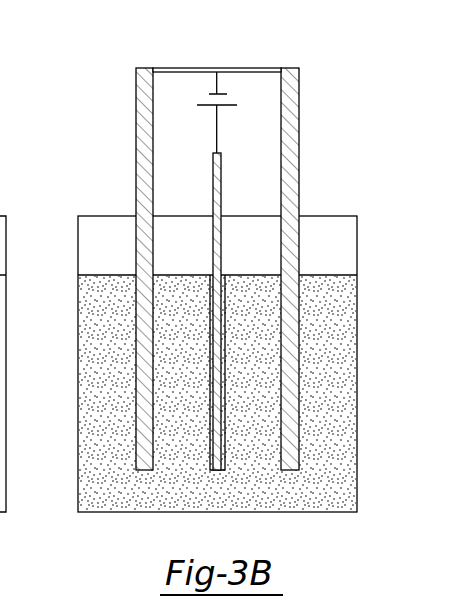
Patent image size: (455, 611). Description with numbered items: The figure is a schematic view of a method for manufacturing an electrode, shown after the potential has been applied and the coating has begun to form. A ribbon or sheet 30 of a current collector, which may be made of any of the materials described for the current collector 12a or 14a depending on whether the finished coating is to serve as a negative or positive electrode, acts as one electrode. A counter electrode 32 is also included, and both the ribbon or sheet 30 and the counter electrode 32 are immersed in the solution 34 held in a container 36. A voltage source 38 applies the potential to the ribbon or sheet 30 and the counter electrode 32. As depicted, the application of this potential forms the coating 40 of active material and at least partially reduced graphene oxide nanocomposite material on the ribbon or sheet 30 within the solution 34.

The ribbon or sheet 30 is at (113, 311).
The current collector 12a is at (217, 311).
The current collector 14a is at (213, 183).
The counter electrode 32 is at (136, 118).
The solution 34 is at (320, 377).
The container 36 is at (357, 247).
The voltage source 38 is at (242, 93).
The coating 40 is at (226, 292).